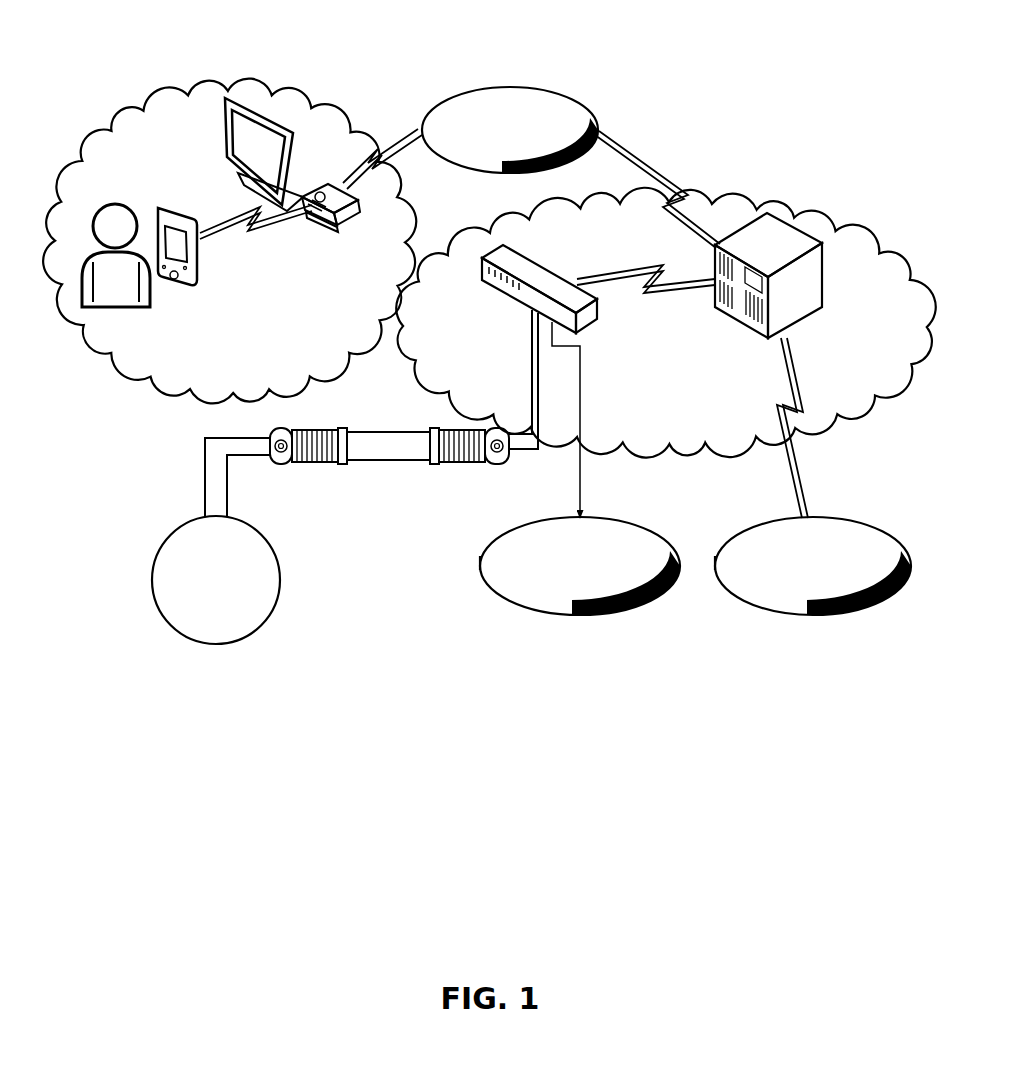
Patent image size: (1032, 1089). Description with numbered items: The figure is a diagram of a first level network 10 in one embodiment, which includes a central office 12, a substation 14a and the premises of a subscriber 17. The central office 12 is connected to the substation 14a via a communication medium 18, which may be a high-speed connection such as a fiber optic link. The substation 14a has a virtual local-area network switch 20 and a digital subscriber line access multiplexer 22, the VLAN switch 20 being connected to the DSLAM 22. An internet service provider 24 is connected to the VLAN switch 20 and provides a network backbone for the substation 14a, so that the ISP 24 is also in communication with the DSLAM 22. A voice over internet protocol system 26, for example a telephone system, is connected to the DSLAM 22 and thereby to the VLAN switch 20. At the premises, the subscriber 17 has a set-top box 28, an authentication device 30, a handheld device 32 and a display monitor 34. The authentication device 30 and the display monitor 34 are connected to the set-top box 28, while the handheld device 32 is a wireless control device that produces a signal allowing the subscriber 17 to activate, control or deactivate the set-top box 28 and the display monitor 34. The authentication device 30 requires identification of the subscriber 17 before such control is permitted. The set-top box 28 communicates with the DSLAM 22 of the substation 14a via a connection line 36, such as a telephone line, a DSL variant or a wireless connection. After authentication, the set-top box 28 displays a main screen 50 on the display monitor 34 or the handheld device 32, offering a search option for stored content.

The network 10 is at (303, 695).
The central office 12 is at (202, 646).
The substation 14a is at (875, 258).
The subscriber 17 is at (92, 305).
The communication medium 18 is at (365, 462).
The virtual local-area network switch 20 is at (500, 295).
The digital subscriber line access multiplexer 22 is at (768, 245).
The internet service provider 24 is at (620, 612).
The voice over internet protocol 26 is at (840, 612).
The set-top box 28 is at (323, 228).
The authentication device 30 is at (330, 185).
The handheld device 32 is at (180, 284).
The display monitor 34 is at (225, 108).
The connection line 36 is at (598, 113).
The main screen 50 is at (174, 232).